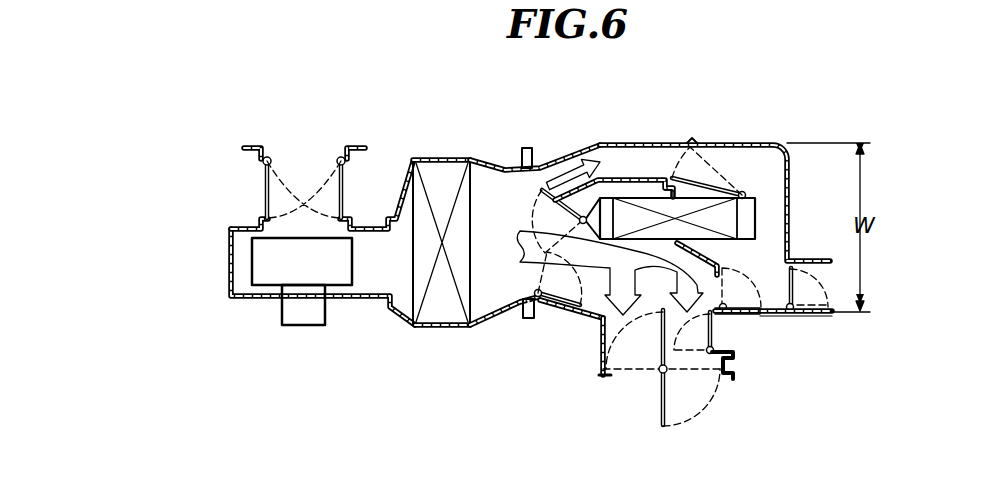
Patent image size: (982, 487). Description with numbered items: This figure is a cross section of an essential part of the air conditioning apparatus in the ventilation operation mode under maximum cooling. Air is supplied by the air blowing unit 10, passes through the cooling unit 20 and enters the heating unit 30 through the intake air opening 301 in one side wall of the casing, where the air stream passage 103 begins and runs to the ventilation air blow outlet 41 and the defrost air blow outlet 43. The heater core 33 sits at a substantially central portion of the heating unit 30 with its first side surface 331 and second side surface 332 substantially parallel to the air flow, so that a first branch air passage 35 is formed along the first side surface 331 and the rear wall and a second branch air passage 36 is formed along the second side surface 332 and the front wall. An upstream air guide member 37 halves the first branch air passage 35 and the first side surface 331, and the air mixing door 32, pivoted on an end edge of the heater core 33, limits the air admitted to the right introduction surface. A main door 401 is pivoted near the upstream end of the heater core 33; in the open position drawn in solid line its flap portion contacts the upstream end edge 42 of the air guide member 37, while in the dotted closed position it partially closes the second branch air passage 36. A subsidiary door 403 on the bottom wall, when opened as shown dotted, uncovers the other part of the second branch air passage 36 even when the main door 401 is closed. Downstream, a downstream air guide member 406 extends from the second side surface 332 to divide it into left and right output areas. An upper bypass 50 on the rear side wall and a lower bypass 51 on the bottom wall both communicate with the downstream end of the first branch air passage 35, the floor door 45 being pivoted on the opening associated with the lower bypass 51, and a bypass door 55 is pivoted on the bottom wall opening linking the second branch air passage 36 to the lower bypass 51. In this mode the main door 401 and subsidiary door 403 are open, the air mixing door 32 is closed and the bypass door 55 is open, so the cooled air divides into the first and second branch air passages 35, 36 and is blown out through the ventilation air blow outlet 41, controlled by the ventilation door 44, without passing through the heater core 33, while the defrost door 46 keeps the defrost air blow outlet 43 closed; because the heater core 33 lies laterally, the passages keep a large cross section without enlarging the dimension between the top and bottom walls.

The air blowing unit 10 is at (363, 302).
The cooling unit 20 is at (452, 328).
The intake air opening 301 is at (530, 282).
The subsidiary door 403 is at (560, 307).
The second branch air passage 36 is at (596, 304).
The main door 401 is at (512, 170).
The upstream end edge of the air guide member 42 is at (558, 200).
The first branch air passage 35 is at (606, 155).
The upstream air guide member 37 is at (627, 176).
The first side surface 331 is at (650, 192).
The heating unit 30 is at (703, 137).
The air stream passage 103 is at (765, 91).
The air mixing door 32 is at (712, 183).
The heater core 33 is at (737, 218).
The upper bypass 50 is at (765, 223).
The lower bypass 51 is at (843, 203).
The downstream air guide member 406 is at (720, 258).
The second side surface 332 is at (648, 241).
The ventilation air blow outlet 41 is at (632, 372).
The ventilation door 44 is at (658, 405).
The defrost air blow outlet 43 is at (719, 325).
The defrost door 46 is at (736, 360).
The bypass door 55 is at (758, 316).
The floor door 45 is at (802, 316).